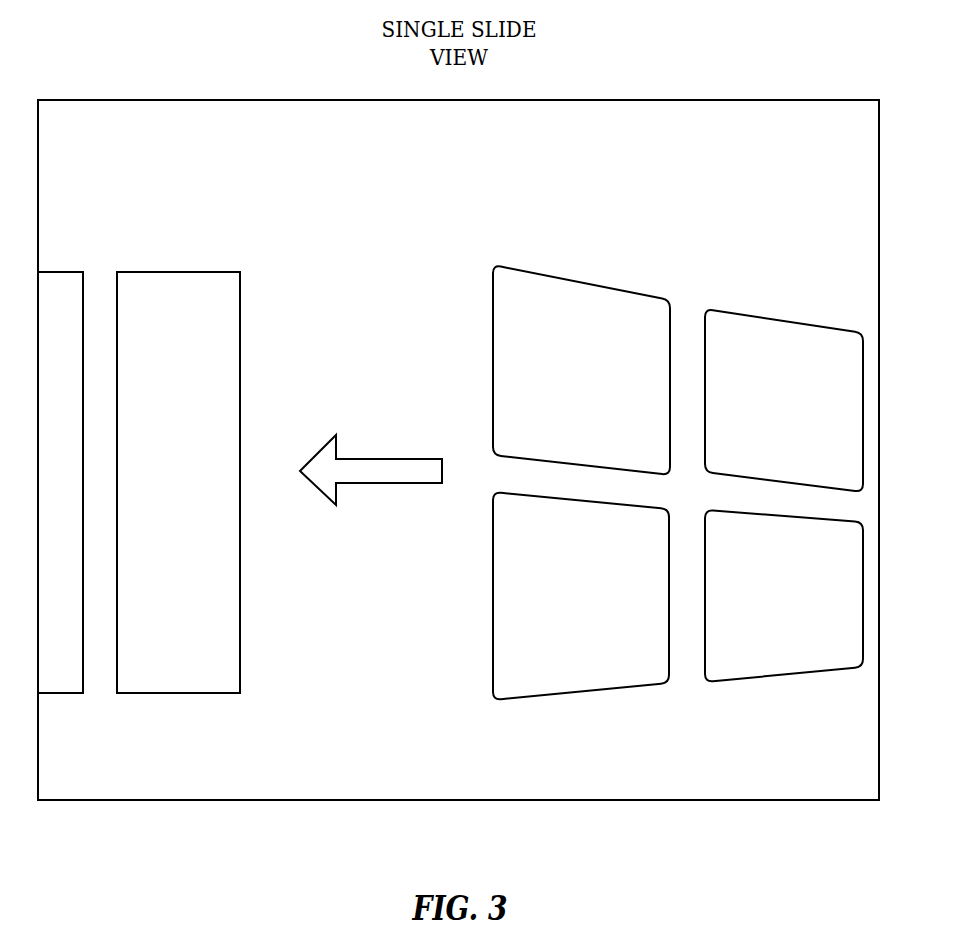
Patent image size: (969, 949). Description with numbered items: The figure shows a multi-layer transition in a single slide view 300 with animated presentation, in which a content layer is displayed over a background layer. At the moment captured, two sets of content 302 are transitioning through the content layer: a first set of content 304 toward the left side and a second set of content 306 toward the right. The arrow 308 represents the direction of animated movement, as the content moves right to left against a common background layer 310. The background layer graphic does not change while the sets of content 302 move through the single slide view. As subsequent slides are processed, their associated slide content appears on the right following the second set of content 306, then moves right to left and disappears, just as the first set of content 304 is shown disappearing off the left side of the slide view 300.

The single slide view 300 is at (686, 100).
The sets of content 302 is at (158, 166).
The first set of content 304 is at (147, 250).
The second set of content 306 is at (777, 236).
The arrow 308 is at (397, 458).
The common background layer 310 is at (808, 129).